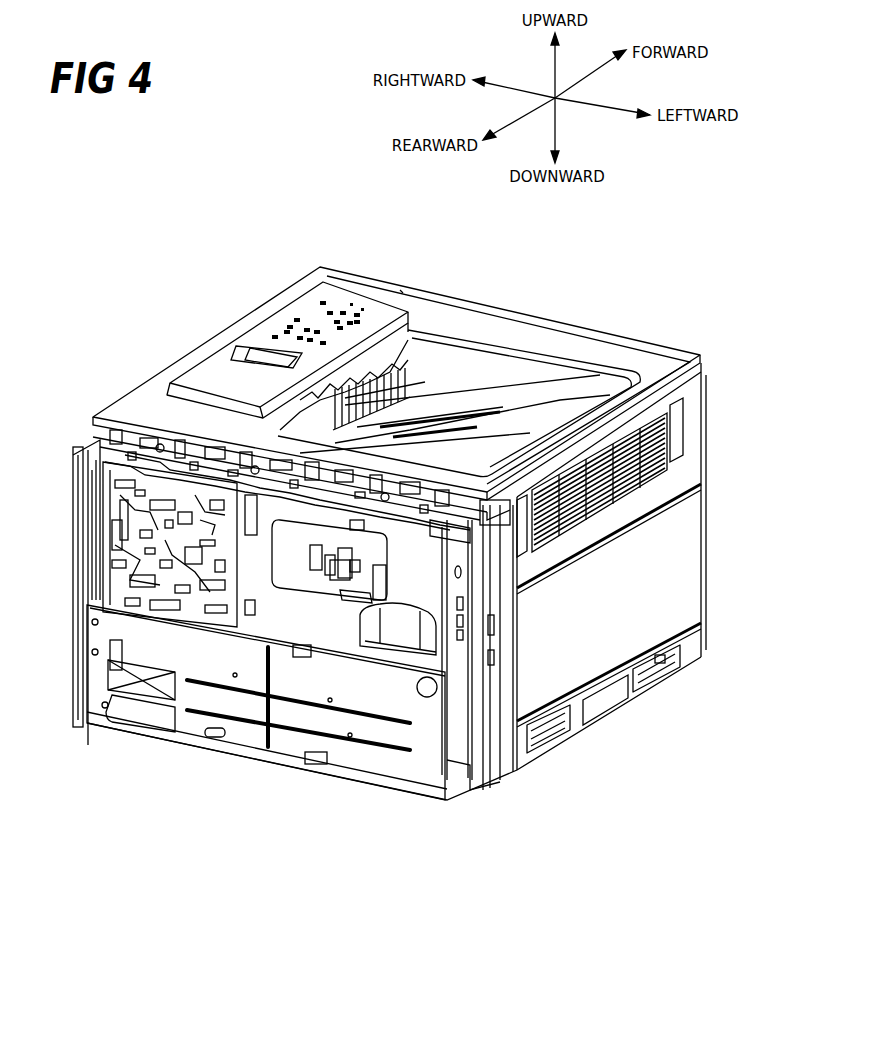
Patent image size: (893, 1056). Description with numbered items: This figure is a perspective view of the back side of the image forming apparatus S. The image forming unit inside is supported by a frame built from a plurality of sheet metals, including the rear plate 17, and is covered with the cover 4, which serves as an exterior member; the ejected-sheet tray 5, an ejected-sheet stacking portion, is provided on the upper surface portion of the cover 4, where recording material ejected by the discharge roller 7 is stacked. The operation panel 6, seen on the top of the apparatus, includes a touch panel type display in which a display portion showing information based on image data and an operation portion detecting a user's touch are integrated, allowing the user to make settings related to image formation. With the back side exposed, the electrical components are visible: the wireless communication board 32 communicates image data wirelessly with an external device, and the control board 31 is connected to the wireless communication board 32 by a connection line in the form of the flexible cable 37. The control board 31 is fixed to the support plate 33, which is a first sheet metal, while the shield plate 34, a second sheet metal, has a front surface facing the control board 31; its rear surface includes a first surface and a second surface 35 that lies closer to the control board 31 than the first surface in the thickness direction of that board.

The cover 4 is at (662, 360).
The ejected-sheet tray 5 is at (597, 375).
The operation panel 6 is at (265, 352).
The discharge roller 7 is at (350, 373).
The image forming apparatus S is at (400, 290).
The rear plate 17 is at (490, 517).
The control board 31 is at (366, 580).
The wireless communication board 32 is at (300, 580).
The support plate 33 is at (463, 577).
The shield plate 34 is at (430, 575).
The second surface 35 is at (292, 575).
The flexible cable 37 is at (333, 590).